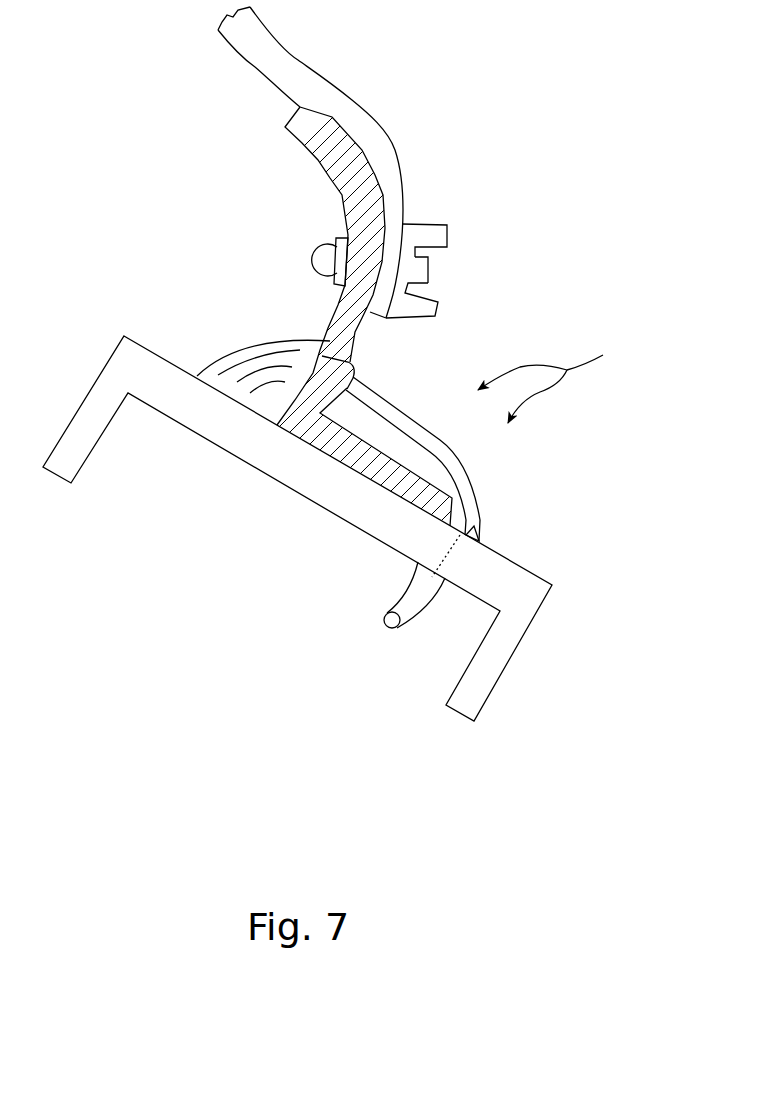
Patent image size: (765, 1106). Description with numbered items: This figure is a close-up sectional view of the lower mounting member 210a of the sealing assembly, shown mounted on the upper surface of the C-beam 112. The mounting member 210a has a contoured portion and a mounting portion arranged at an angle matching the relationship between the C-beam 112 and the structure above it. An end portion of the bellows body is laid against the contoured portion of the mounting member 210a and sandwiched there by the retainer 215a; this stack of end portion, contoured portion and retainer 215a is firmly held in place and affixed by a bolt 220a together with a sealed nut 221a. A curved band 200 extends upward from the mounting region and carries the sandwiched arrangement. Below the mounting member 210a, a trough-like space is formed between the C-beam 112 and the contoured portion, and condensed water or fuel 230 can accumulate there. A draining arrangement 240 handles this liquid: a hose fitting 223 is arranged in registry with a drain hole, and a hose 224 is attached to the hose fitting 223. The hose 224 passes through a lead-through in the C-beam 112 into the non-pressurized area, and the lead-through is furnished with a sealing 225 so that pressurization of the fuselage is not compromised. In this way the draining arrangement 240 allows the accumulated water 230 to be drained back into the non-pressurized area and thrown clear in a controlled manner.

The C-beam 112 is at (307, 477).
The strap 200 is at (317, 97).
The lower mounting member 210a is at (304, 162).
The retainer 215a is at (438, 232).
The bolt 220a is at (430, 270).
The sealed nut 221a is at (317, 253).
The hose fitting 223 is at (347, 364).
The hose 224 is at (287, 337).
The sealing 225 is at (480, 534).
The condensed water or fuel 230 is at (247, 370).
The draining arrangement 240 is at (562, 378).